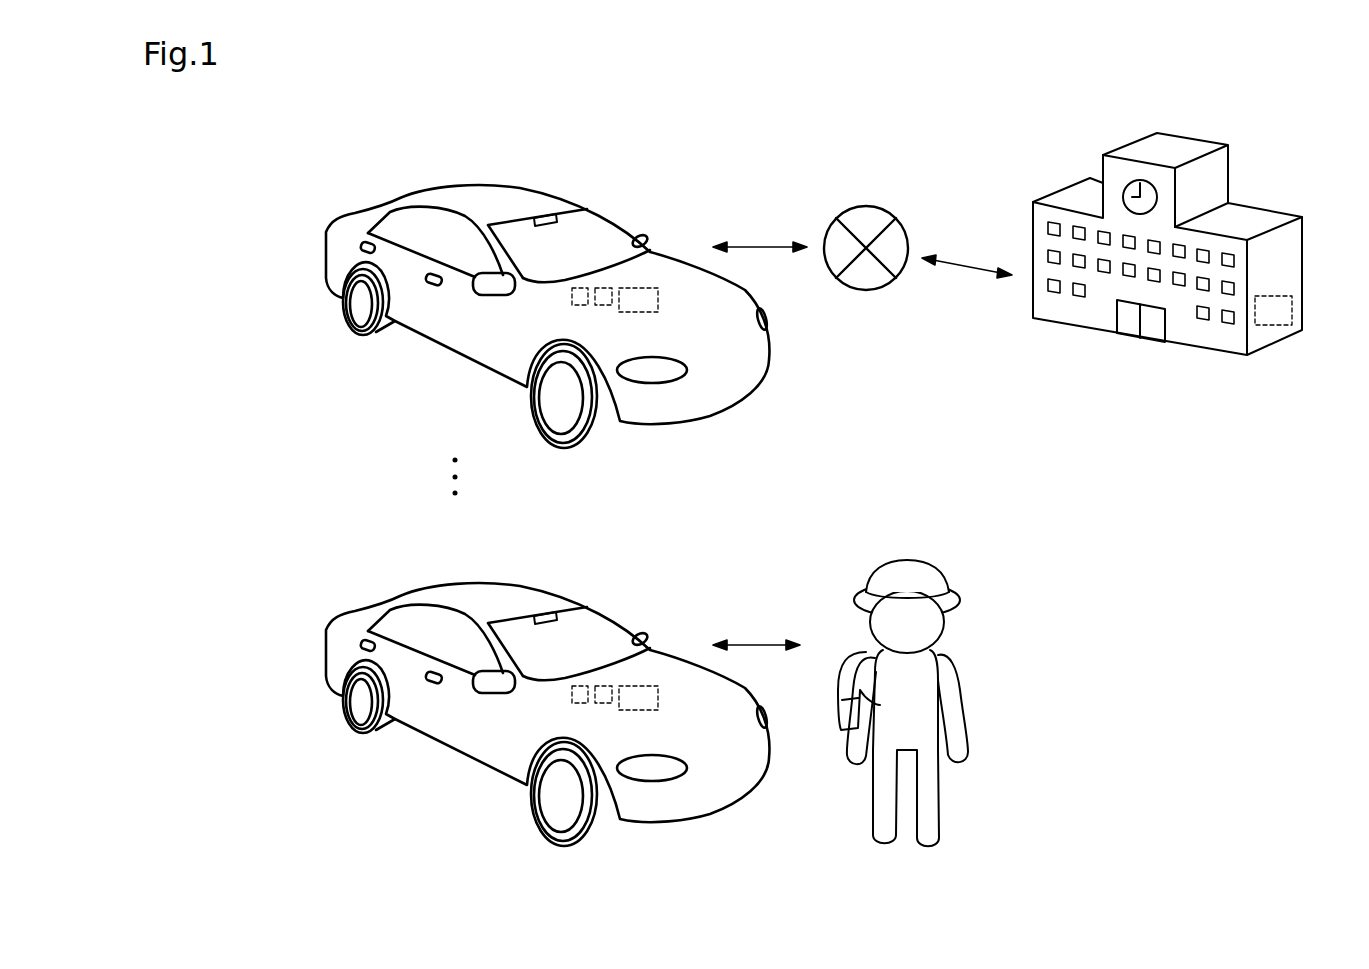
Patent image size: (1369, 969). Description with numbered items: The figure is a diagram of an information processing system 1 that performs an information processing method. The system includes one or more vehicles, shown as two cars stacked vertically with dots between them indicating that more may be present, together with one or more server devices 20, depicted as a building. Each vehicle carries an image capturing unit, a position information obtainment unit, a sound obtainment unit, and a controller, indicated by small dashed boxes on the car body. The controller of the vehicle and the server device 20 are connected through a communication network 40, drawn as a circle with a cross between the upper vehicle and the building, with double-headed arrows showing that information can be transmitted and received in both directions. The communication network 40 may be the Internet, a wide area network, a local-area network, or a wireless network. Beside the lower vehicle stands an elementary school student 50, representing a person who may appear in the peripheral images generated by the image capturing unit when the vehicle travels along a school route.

The information processing system 1 is at (1290, 132).
The server device 20 is at (1270, 325).
The communication network 40 is at (863, 206).
The elementary school student 50 is at (885, 847).